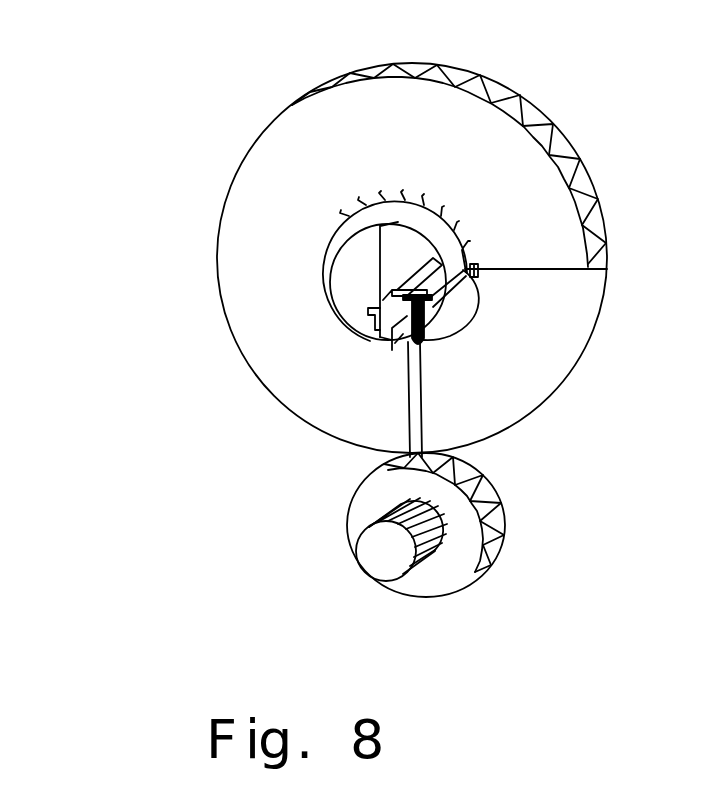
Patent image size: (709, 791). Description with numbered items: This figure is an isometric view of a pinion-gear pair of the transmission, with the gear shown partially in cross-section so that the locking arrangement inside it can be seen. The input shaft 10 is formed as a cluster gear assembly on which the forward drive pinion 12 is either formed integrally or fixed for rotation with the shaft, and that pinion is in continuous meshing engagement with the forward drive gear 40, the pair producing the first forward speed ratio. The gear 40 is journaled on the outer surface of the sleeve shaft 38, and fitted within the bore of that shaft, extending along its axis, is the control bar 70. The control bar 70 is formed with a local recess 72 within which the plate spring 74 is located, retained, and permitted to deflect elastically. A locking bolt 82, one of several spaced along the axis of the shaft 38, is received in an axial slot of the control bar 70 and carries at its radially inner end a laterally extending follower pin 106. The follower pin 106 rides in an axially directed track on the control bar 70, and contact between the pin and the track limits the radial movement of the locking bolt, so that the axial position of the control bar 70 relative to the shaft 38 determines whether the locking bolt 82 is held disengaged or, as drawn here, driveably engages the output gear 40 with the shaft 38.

The forward drive gear 40 is at (300, 172).
The control bar 70 is at (347, 283).
The plate spring 74 is at (405, 290).
The local recess 72 is at (420, 288).
The follower pin 106 is at (465, 273).
The locking bolt 82 is at (428, 335).
The sleeve shaft 38 is at (404, 338).
The input shaft 10 is at (388, 555).
The forward drive pinion 12 is at (455, 558).